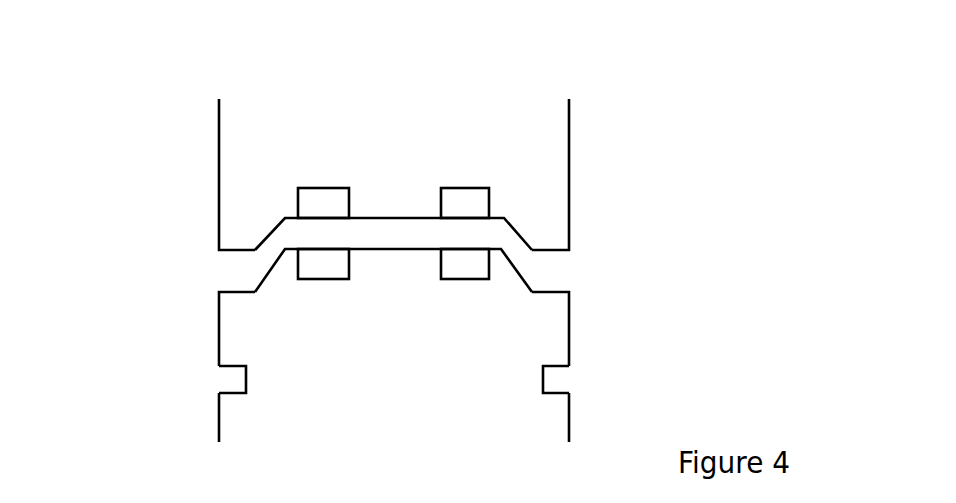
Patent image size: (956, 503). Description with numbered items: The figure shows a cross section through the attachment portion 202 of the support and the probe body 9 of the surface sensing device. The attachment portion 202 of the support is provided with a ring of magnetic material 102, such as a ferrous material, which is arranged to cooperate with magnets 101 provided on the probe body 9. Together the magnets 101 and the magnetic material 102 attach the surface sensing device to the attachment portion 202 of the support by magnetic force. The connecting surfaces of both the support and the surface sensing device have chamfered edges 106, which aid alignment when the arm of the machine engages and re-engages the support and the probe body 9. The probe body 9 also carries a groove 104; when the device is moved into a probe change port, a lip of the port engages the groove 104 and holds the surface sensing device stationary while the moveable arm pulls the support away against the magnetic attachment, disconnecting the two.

The probe body 9 is at (256, 328).
The magnets 101 is at (462, 263).
The ring of magnetic material 102 is at (466, 202).
The groove 104 is at (215, 377).
The chamfered edges 106 is at (267, 270).
The attachment portion 202 is at (537, 158).